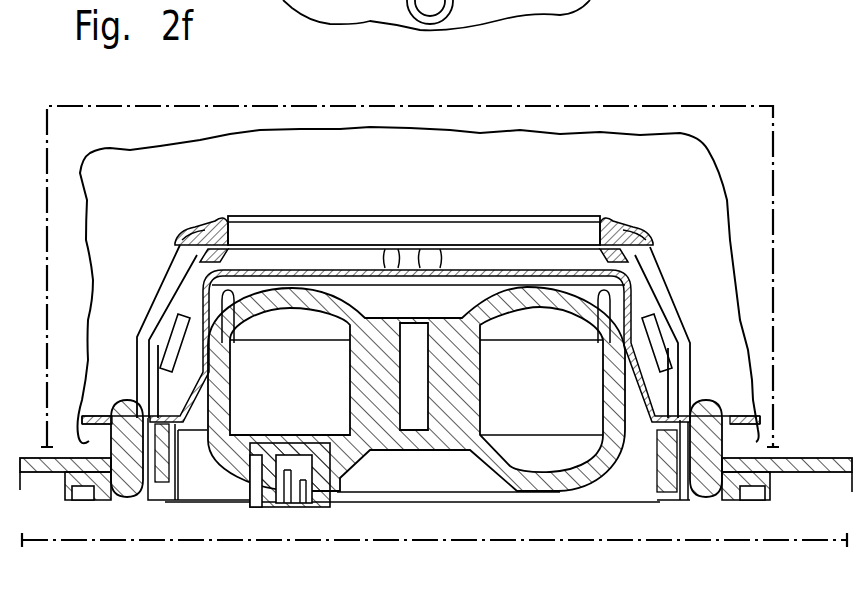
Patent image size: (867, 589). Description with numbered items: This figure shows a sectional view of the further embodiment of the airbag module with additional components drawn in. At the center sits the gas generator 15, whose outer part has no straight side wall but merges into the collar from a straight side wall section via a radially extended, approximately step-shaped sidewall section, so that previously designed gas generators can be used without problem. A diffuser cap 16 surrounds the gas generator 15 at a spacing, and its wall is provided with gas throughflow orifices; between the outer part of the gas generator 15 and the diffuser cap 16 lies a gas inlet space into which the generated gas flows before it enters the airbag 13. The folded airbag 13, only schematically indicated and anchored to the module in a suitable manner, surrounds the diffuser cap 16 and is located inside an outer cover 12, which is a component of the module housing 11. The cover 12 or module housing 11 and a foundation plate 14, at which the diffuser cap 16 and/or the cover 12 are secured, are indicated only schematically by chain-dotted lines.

The module housing 11 is at (738, 104).
The outer cover 12 is at (657, 105).
The airbag 13 is at (253, 129).
The foundation plate 14 is at (226, 541).
The gas generator 15 is at (646, 293).
The diffuser cap 16 is at (523, 238).